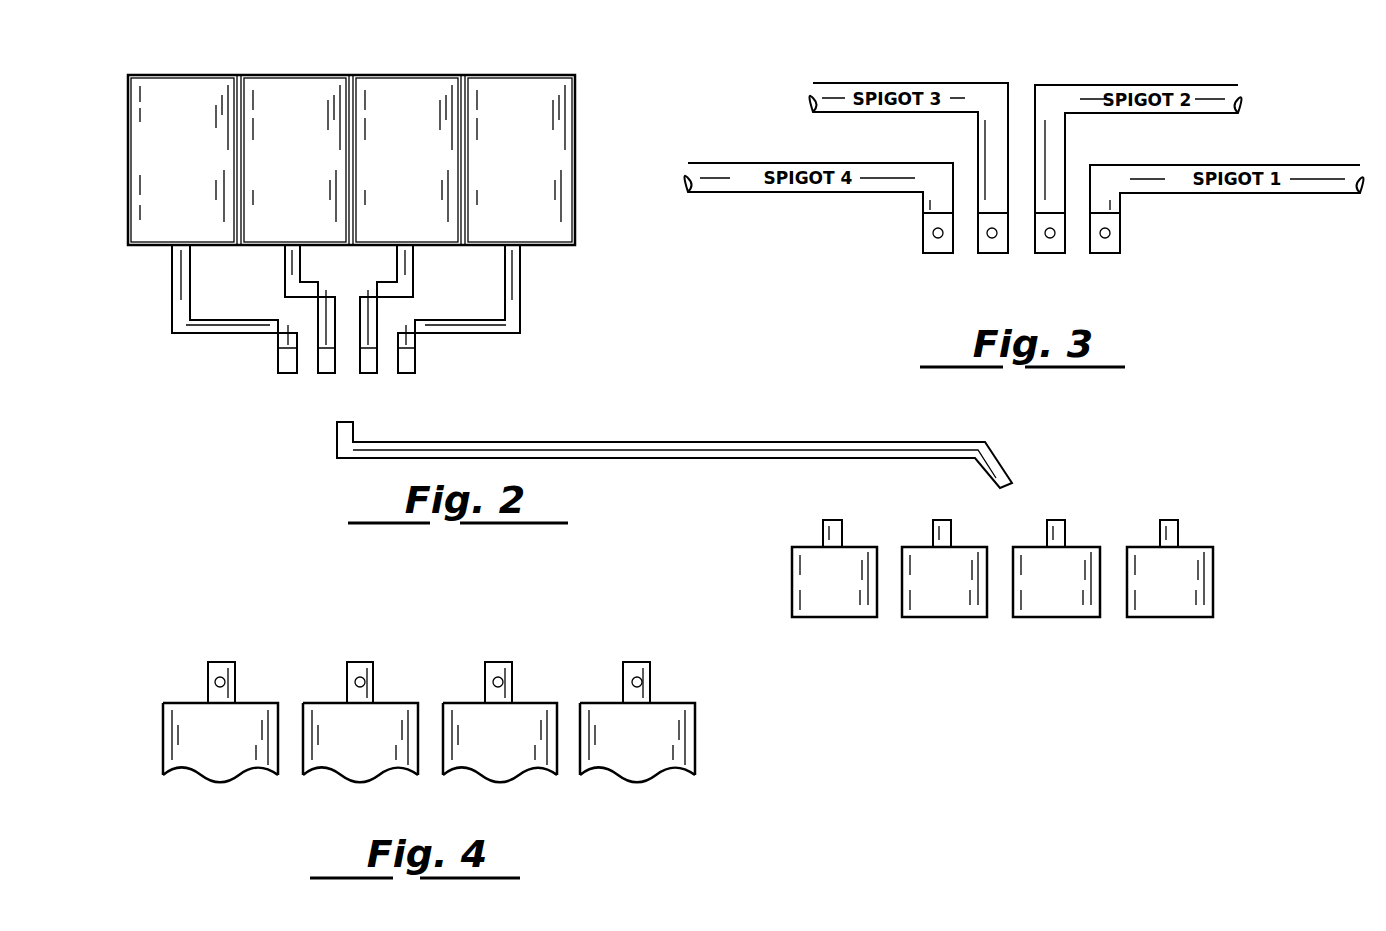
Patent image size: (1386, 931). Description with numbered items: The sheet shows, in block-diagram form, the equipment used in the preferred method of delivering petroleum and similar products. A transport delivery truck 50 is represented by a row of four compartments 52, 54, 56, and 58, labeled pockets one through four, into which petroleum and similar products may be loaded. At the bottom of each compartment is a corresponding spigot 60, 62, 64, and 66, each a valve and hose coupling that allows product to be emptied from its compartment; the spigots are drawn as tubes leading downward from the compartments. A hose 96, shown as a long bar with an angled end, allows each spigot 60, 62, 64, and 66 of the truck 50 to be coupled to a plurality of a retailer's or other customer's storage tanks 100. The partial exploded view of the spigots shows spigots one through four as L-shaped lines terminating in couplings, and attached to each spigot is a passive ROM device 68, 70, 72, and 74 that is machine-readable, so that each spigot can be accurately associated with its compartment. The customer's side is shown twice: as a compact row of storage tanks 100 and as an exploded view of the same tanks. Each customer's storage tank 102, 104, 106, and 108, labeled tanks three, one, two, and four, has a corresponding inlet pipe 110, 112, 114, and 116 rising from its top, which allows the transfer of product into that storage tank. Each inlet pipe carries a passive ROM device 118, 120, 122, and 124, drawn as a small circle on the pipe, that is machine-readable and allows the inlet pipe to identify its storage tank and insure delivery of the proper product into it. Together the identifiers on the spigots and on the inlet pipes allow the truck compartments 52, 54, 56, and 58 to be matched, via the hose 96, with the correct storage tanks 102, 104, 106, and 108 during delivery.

In FIG. 2, the transport delivery truck 50 is at (592, 118).
In FIG. 2, the compartment 52 is at (491, 76).
In FIG. 2, the compartment 54 is at (378, 76).
In FIG. 2, the compartment 56 is at (268, 76).
In FIG. 2, the compartment 58 is at (175, 76).
In FIG. 2, the spigot 60 is at (417, 357).
In FIG. 3, the spigot 60 is at (1098, 223).
In FIG. 2, the spigot 62 is at (367, 357).
In FIG. 3, the spigot 62 is at (1043, 223).
In FIG. 2, the spigot 64 is at (320, 357).
In FIG. 3, the spigot 64 is at (984, 223).
In FIG. 2, the spigot 66 is at (278, 357).
In FIG. 3, the spigot 66 is at (930, 223).
In FIG. 3, the passive ROM device 68 is at (1105, 240).
In FIG. 3, the passive ROM device 70 is at (1050, 240).
In FIG. 3, the passive ROM device 72 is at (992, 240).
In FIG. 3, the passive ROM device 74 is at (938, 240).
In FIG. 2, the hose 96 is at (635, 442).
In FIG. 4, the storage tanks 100 is at (772, 577).
In FIG. 4, the storage tank 102 is at (832, 617).
In FIG. 4, the storage tank 104 is at (940, 617).
In FIG. 4, the storage tank 106 is at (1050, 617).
In FIG. 4, the storage tank 108 is at (1165, 617).
In FIG. 4, the inlet pipe 110 is at (830, 520).
In FIG. 4, the inlet pipe 112 is at (940, 520).
In FIG. 4, the inlet pipe 114 is at (1055, 520).
In FIG. 4, the inlet pipe 116 is at (1167, 520).
In FIG. 4, the passive ROM device 118 is at (214, 683).
In FIG. 4, the passive ROM device 120 is at (354, 683).
In FIG. 4, the passive ROM device 122 is at (492, 683).
In FIG. 4, the passive ROM device 124 is at (631, 683).